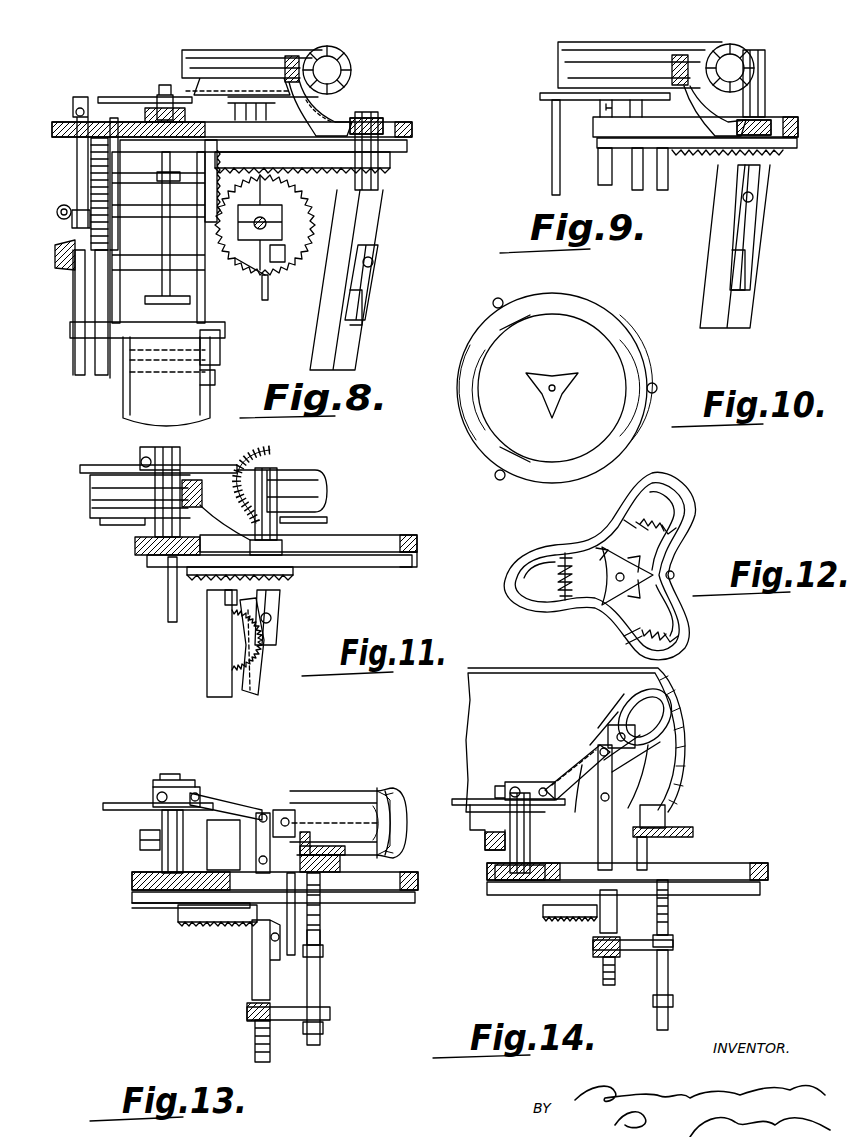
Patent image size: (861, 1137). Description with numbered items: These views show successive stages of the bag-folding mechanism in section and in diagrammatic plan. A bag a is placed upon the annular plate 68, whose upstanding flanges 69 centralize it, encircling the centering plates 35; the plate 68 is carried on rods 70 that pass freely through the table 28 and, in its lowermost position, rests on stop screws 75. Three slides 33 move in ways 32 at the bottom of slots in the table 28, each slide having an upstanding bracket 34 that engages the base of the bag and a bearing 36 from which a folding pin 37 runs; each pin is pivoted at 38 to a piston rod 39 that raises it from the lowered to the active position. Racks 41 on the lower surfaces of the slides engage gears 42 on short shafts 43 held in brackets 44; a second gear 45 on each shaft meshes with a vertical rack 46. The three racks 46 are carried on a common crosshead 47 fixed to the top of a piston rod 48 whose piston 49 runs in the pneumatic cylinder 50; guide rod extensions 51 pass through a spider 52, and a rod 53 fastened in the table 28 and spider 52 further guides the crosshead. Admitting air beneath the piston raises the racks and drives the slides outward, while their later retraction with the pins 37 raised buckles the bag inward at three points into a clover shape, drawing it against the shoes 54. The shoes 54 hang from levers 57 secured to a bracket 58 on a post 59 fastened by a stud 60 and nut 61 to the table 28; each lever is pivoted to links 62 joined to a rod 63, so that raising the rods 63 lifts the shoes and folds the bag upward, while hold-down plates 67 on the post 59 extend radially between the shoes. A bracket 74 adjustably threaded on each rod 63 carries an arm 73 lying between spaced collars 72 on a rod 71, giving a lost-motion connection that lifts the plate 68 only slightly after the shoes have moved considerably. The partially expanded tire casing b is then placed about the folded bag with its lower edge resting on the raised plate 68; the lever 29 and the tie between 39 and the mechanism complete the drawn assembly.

In FIG. 8, the table 28 is at (412, 130).
In FIG. 9, the table 28 is at (798, 127).
In FIG. 11, the table 28 is at (410, 535).
In FIG. 13, the table 28 is at (413, 906).
In FIG. 14, the table 28 is at (768, 876).
In FIG. 8, the lever 29 is at (345, 351).
In FIG. 9, the lever 29 is at (748, 305).
In FIG. 11, the ways 32 is at (410, 562).
In FIG. 8, the slides 33 is at (410, 146).
In FIG. 9, the slides 33 is at (790, 146).
In FIG. 11, the slides 33 is at (292, 561).
In FIG. 8, the upstanding brackets 34 is at (342, 121).
In FIG. 9, the upstanding brackets 34 is at (740, 119).
In FIG. 11, the upstanding brackets 34 is at (140, 542).
In FIG. 8, the centering plates 35 is at (300, 62).
In FIG. 9, the centering plates 35 is at (688, 58).
In FIG. 10, the centering plates 35 is at (608, 398).
In FIG. 11, the centering plates 35 is at (205, 480).
In FIG. 12, the centering plates 35 is at (598, 562).
In FIG. 13, the centering plates 35 is at (240, 815).
In FIG. 14, the centering plates 35 is at (488, 840).
In FIG. 8, the bearing 36 is at (385, 126).
In FIG. 9, the bearing 36 is at (775, 128).
In FIG. 11, the bearing 36 is at (290, 547).
In FIG. 8, the folding pin 37 is at (378, 125).
In FIG. 9, the folding pin 37 is at (766, 70).
In FIG. 10, the folding pin 37 is at (504, 300).
In FIG. 11, the folding pin 37 is at (280, 485).
In FIG. 12, the folding pin 37 is at (600, 532).
In FIG. 13, the folding pin 37 is at (287, 930).
In FIG. 14, the folding pin 37 is at (510, 856).
In FIG. 8, the pivot 38 is at (380, 262).
In FIG. 9, the pivot 38 is at (760, 201).
In FIG. 11, the pivot 38 is at (280, 617).
In FIG. 8, the piston rod 39 is at (352, 306).
In FIG. 9, the piston rod 39 is at (743, 262).
In FIG. 8, the racks 41 is at (395, 164).
In FIG. 9, the racks 41 is at (785, 155).
In FIG. 11, the racks 41 is at (190, 578).
In FIG. 13, the racks 41 is at (185, 925).
In FIG. 14, the racks 41 is at (552, 921).
In FIG. 8, the gear 42 is at (265, 300).
In FIG. 11, the gear 42 is at (225, 600).
In FIG. 8, the short shaft 43 is at (248, 264).
In FIG. 8, the bracket 44 is at (277, 223).
In FIG. 8, the second gear 45 is at (277, 262).
In FIG. 11, the second gear 45 is at (262, 672).
In FIG. 8, the vertical rack 46 is at (210, 140).
In FIG. 11, the vertical rack 46 is at (212, 655).
In FIG. 8, the crosshead 47 is at (140, 214).
In FIG. 8, the piston rod 48 is at (162, 287).
In FIG. 8, the piston 49 is at (205, 380).
In FIG. 8, the pneumatic cylinder 50 is at (140, 413).
In FIG. 8, the guide rod extensions 51 is at (96, 372).
In FIG. 8, the spider 52 is at (78, 337).
In FIG. 8, the rod 53 is at (112, 125).
In FIG. 12, the shoes 54 is at (540, 548).
In FIG. 13, the shoes 54 is at (290, 810).
In FIG. 14, the shoes 54 is at (612, 728).
In FIG. 13, the levers 57 is at (230, 798).
In FIG. 14, the levers 57 is at (562, 776).
In FIG. 13, the bracket 58 is at (186, 788).
In FIG. 14, the bracket 58 is at (515, 783).
In FIG. 11, the post 59 is at (95, 512).
In FIG. 13, the post 59 is at (162, 870).
In FIG. 14, the post 59 is at (500, 880).
In FIG. 13, the stud 60 is at (150, 908).
In FIG. 8, the nut 61 is at (163, 85).
In FIG. 13, the nut 61 is at (170, 789).
In FIG. 8, the links 62 is at (78, 98).
In FIG. 13, the links 62 is at (263, 814).
In FIG. 14, the links 62 is at (614, 772).
In FIG. 8, the rod 63 is at (82, 312).
In FIG. 13, the rod 63 is at (255, 1052).
In FIG. 14, the rod 63 is at (650, 848).
In FIG. 10, the hold-down plates 67 is at (548, 375).
In FIG. 11, the hold-down plates 67 is at (95, 470).
In FIG. 12, the hold-down plates 67 is at (612, 608).
In FIG. 13, the hold-down plates 67 is at (120, 804).
In FIG. 14, the hold-down plates 67 is at (460, 800).
In FIG. 8, the annular plate 68 is at (107, 97).
In FIG. 11, the annular plate 68 is at (330, 518).
In FIG. 13, the annular plate 68 is at (340, 866).
In FIG. 14, the annular plate 68 is at (692, 831).
In FIG. 8, the upstanding flanges 69 is at (236, 70).
In FIG. 9, the upstanding flanges 69 is at (595, 88).
In FIG. 14, the upstanding flanges 69 is at (657, 815).
In FIG. 9, the rods 70 is at (552, 172).
In FIG. 11, the rods 70 is at (168, 579).
In FIG. 13, the rods 70 is at (255, 974).
In FIG. 14, the rods 70 is at (620, 915).
In FIG. 9, the rods 71 is at (605, 184).
In FIG. 13, the rods 71 is at (312, 1046).
In FIG. 14, the rods 71 is at (668, 975).
In FIG. 13, the collars 72 is at (323, 950).
In FIG. 14, the collars 72 is at (673, 940).
In FIG. 13, the arm 73 is at (325, 1008).
In FIG. 14, the arm 73 is at (673, 948).
In FIG. 8, the bracket 74 is at (60, 253).
In FIG. 13, the bracket 74 is at (247, 1012).
In FIG. 14, the bracket 74 is at (595, 950).
In FIG. 8, the stop screws 75 is at (252, 85).
In FIG. 9, the stop screws 75 is at (592, 108).
In FIG. 13, the stop screws 75 is at (322, 918).
In FIG. 14, the stop screws 75 is at (670, 905).
In FIG. 8, the bag a is at (348, 56).
In FIG. 14, the tire casing b is at (688, 752).